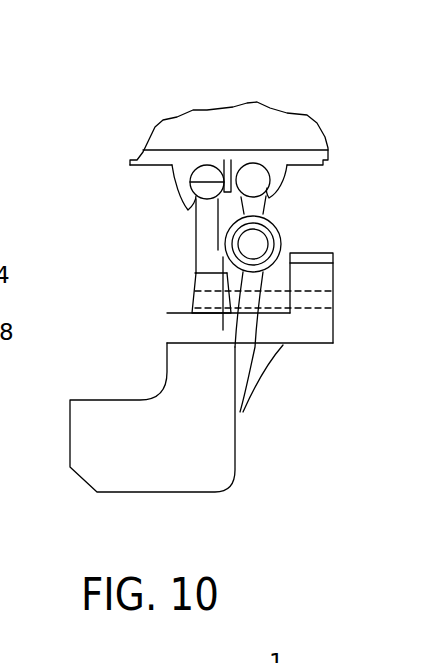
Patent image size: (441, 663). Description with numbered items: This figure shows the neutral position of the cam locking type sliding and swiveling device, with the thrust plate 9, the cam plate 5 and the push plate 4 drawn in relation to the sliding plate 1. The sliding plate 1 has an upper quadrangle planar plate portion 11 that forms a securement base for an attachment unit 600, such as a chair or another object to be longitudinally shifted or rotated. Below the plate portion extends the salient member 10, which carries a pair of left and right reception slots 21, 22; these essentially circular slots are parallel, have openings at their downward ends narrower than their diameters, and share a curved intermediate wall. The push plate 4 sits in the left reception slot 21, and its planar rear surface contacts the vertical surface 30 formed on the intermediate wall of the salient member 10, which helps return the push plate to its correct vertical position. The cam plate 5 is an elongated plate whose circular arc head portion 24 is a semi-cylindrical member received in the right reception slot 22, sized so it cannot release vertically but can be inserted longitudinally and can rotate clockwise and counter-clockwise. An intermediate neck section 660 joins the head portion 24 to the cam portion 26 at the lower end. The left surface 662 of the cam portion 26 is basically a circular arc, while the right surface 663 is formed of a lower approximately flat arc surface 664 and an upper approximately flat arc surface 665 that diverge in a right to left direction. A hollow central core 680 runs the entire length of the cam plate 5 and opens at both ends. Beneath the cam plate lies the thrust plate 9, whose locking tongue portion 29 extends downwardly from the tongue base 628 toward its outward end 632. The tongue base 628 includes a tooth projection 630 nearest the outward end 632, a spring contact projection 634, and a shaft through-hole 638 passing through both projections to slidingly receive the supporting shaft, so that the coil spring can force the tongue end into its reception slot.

The sliding plate 1 is at (320, 138).
The push plate 4 is at (196, 233).
The cam plate 5 is at (268, 230).
The thrust plate 9 is at (223, 453).
The salient member 10 is at (181, 204).
The upper quadrangle planar plate portion 11 is at (162, 152).
The left reception slot 21 is at (178, 183).
The right reception slot 22 is at (284, 183).
The circular arc head portion 24 is at (292, 194).
The cam portion 26 is at (287, 251).
The locking tongue portion 29 is at (103, 466).
The vertical surface 30 is at (233, 176).
The attachment unit 600 is at (242, 106).
The tongue base 628 is at (320, 333).
The tooth projection 630 is at (243, 300).
The outward end 632 is at (70, 440).
The spring contact projection 634 is at (332, 283).
The shaft through-hole 638 is at (313, 303).
The intermediate neck section 660 is at (250, 172).
The left surface 662 is at (235, 335).
The right surface 663 is at (336, 252).
The lower approximately flat arc surface 664 is at (250, 380).
The upper approximately flat arc surface 665 is at (312, 275).
The hollow central core 680 is at (253, 255).